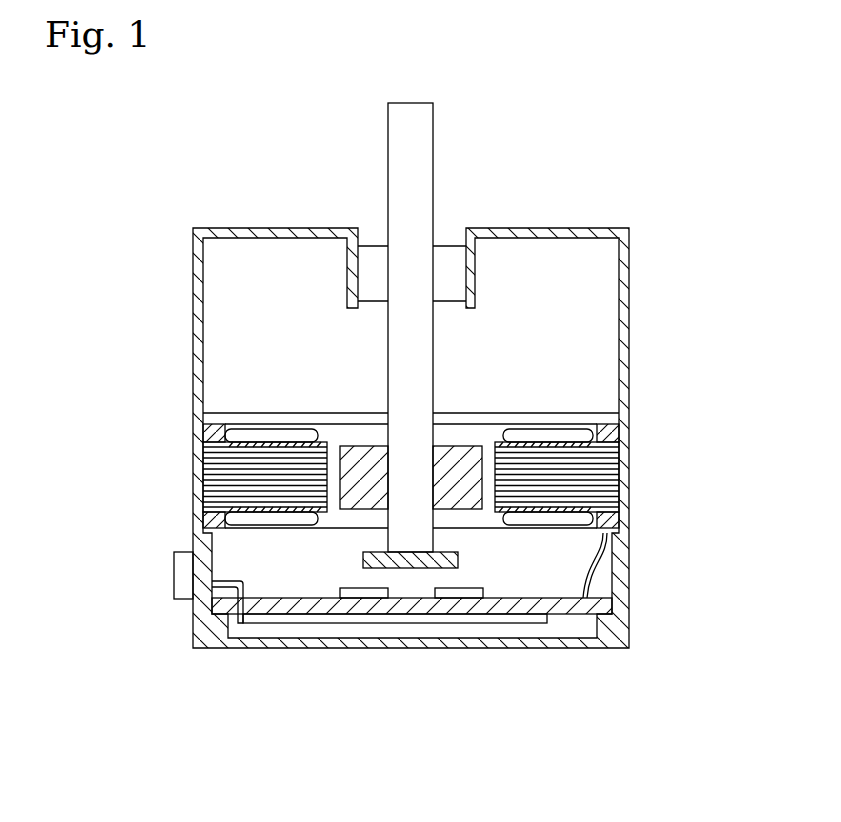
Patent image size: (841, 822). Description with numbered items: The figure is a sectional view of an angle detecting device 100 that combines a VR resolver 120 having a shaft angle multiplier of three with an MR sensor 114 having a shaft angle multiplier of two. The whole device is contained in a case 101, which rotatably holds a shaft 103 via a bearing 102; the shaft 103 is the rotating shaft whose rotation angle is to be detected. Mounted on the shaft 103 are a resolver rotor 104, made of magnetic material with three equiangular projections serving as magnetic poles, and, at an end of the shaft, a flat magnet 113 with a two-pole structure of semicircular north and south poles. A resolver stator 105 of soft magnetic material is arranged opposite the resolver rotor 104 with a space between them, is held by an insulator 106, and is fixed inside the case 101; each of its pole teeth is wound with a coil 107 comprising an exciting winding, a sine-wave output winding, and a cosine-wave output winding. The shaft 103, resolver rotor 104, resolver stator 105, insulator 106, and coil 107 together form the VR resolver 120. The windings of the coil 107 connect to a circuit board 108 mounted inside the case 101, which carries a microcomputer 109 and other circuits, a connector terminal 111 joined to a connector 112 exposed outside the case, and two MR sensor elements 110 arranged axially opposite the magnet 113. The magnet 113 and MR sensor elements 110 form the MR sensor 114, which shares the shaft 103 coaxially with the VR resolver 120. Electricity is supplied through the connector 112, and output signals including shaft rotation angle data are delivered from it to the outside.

The angle detecting device 100 is at (645, 341).
The case 101 is at (622, 626).
The bearing 102 is at (447, 282).
The shaft 103 is at (420, 341).
The resolver rotor 104 is at (452, 456).
The resolver stator 105 is at (272, 460).
The insulator 106 is at (610, 436).
The coil 107 is at (543, 440).
The circuit board 108 is at (612, 606).
The microcomputer 109 is at (509, 623).
The MR sensor elements 110 is at (369, 593).
The connector terminal 111 is at (241, 581).
The connector 112 is at (187, 575).
The magnet 113 is at (363, 558).
The MR sensor 114 is at (388, 640).
The VR resolver 120 is at (479, 488).